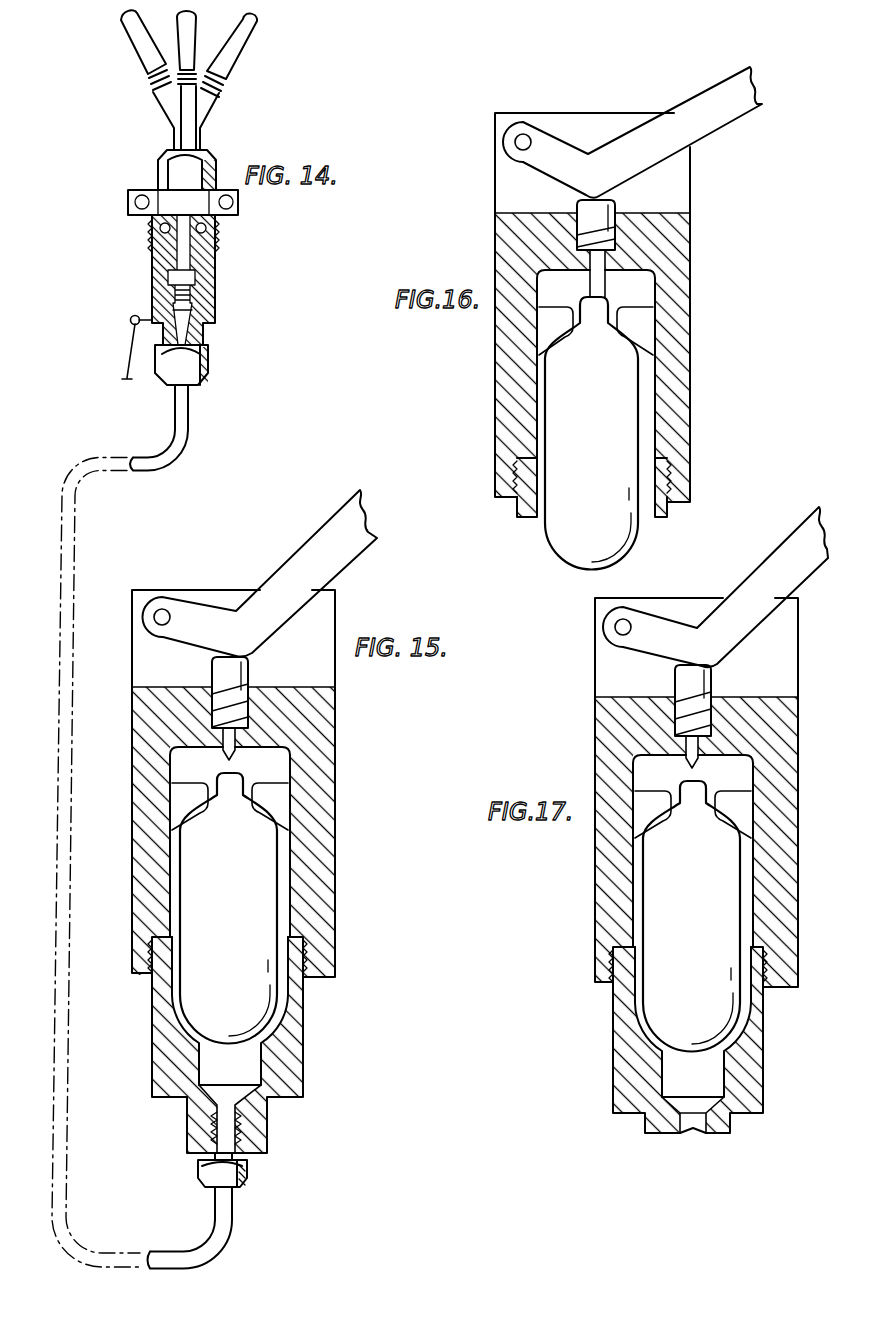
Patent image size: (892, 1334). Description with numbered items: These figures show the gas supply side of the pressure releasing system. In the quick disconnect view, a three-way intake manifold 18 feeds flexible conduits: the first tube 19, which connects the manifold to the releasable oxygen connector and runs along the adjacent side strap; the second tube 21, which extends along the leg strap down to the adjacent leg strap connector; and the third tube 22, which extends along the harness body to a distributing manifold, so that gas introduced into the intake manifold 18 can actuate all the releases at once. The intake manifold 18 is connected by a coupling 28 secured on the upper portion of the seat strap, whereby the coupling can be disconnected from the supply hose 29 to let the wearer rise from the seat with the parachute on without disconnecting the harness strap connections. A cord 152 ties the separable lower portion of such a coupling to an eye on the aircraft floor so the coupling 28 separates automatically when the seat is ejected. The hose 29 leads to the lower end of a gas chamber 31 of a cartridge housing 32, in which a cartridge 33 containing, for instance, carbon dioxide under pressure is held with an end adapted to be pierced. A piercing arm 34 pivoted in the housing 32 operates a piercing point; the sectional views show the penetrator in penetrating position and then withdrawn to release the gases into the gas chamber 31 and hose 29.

In FIG. 14, the intake manifold 18 is at (168, 117).
In FIG. 14, the first tube 19 is at (232, 60).
In FIG. 14, the second tube 21 is at (190, 22).
In FIG. 14, the third tube 22 is at (133, 51).
In FIG. 14, the coupling 28 is at (113, 214).
In FIG. 14, the cord 152 is at (131, 345).
In FIG. 14, the supply hose 29 is at (178, 414).
In FIG. 15, the supply hose 29 is at (215, 1228).
In FIG. 15, the gas chamber 31 is at (251, 1062).
In FIG. 17, the gas chamber 31 is at (667, 1040).
In FIG. 15, the cartridge housing 32 is at (255, 783).
In FIG. 16, the cartridge housing 32 is at (572, 307).
In FIG. 17, the cartridge housing 32 is at (678, 792).
In FIG. 15, the cartridge 33 is at (228, 898).
In FIG. 16, the cartridge 33 is at (570, 433).
In FIG. 17, the cartridge 33 is at (690, 909).
In FIG. 15, the piercing arm 34 is at (259, 573).
In FIG. 16, the piercing arm 34 is at (632, 132).
In FIG. 17, the piercing arm 34 is at (715, 587).